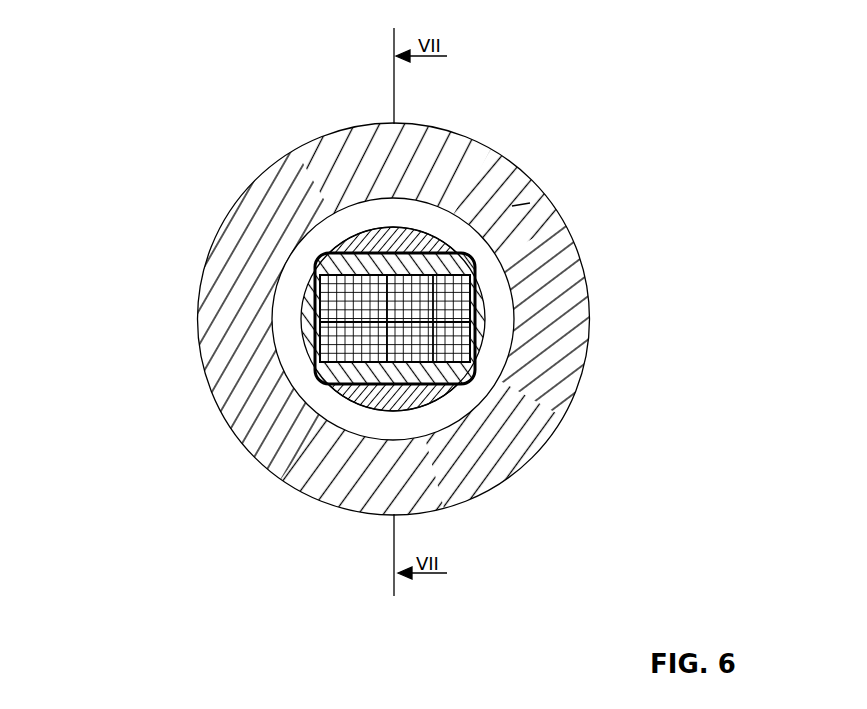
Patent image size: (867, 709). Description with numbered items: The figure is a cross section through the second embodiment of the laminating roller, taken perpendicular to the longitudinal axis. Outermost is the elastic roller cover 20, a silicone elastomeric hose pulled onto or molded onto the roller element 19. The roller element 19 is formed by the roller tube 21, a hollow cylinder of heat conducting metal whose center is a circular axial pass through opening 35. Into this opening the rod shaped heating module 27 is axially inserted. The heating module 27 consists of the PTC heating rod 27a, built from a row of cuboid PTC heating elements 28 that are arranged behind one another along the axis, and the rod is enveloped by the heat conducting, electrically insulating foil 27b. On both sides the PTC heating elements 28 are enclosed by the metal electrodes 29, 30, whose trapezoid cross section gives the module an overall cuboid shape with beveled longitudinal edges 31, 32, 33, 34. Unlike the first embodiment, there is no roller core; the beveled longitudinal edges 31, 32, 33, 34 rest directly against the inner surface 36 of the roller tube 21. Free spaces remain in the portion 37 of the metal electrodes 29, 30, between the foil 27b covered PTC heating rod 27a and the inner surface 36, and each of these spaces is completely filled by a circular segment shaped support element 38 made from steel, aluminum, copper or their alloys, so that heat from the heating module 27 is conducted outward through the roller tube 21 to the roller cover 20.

The roller element 19 is at (462, 212).
The roller cover 20 is at (482, 232).
The roller tube 21 is at (330, 400).
The rod shaped heating module 27 is at (445, 393).
The PTC heating rod 27a is at (470, 273).
The foil 27b is at (337, 254).
The PTC heating elements 28 is at (350, 320).
The metal electrode 29 is at (328, 274).
The metal electrode 30 is at (345, 372).
The longitudinal edge 31 is at (318, 268).
The longitudinal edge 32 is at (465, 262).
The longitudinal edge 33 is at (470, 375).
The longitudinal edge 34 is at (345, 367).
The pass through opening 35 is at (386, 403).
The inner surface 36 is at (413, 242).
The portion 37 is at (393, 232).
The support element 38 is at (390, 233).